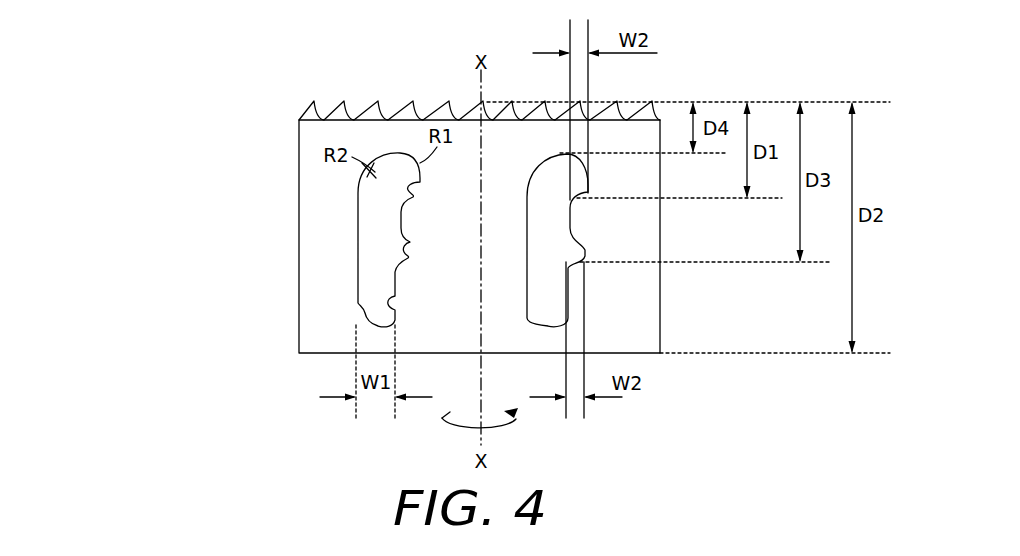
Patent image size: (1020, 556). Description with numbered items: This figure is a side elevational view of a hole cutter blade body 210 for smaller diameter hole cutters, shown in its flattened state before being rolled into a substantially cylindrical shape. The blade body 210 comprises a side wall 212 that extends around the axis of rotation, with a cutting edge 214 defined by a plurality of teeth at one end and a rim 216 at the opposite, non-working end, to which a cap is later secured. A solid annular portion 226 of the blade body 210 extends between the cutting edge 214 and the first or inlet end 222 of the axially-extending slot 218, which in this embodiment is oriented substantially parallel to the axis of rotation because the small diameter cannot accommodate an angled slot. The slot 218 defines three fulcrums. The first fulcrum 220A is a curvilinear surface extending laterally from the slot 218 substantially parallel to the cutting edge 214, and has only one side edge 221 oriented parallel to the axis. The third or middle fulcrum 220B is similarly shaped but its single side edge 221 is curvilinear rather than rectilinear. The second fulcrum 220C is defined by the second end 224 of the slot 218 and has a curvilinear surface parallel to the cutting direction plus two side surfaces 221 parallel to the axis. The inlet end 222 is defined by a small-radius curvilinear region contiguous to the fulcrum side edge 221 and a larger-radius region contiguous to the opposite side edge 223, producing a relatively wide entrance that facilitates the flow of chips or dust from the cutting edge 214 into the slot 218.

The blade body 210 is at (666, 232).
The side wall 212 is at (640, 340).
The cutting edge 214 is at (452, 112).
The rim 216 is at (646, 354).
The axially-extending slot 218 is at (362, 180).
The first fulcrum 220A is at (401, 212).
The third or middle fulcrum 220B is at (395, 272).
The second fulcrum 220C is at (355, 315).
The side edge 221 is at (367, 303).
The first or inlet end 222 is at (398, 155).
The side edge 223 is at (357, 240).
The second end 224 is at (376, 326).
The annular portion 226 is at (345, 142).